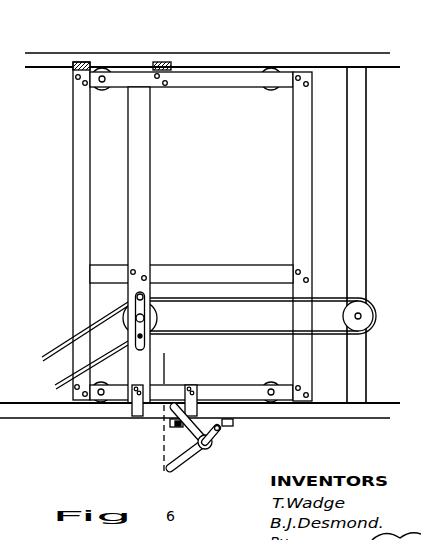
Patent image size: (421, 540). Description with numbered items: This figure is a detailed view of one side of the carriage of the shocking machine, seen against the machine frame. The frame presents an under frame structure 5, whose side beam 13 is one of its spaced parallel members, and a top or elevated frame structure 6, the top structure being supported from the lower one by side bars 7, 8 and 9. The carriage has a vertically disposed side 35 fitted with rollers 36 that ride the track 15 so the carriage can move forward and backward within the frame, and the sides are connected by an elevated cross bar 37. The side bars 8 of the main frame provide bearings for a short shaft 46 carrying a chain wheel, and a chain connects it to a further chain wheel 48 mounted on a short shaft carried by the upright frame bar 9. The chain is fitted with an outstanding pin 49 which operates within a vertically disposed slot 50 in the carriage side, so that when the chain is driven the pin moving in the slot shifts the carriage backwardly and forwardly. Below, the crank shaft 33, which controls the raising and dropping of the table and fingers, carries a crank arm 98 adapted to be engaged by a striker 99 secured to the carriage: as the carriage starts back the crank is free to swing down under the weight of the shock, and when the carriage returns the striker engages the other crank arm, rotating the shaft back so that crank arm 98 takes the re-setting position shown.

The track 15 is at (279, 55).
The top frame structure 6 is at (47, 64).
The side bar 9 is at (367, 163).
The roller 36 is at (272, 90).
The carriage side 35 is at (307, 181).
The cross bar 37 is at (83, 60).
The chain wheel 48 is at (365, 310).
The side bar 8 is at (143, 164).
The short shaft 46 is at (142, 316).
The slot 50 is at (135, 298).
The pin 49 is at (139, 338).
The side bar 7 is at (154, 438).
The under frame structure 5 is at (20, 396).
The side beam 13 is at (55, 413).
The striker 99 is at (136, 412).
The crank arm 98 is at (171, 428).
The crank shaft 33 is at (214, 439).